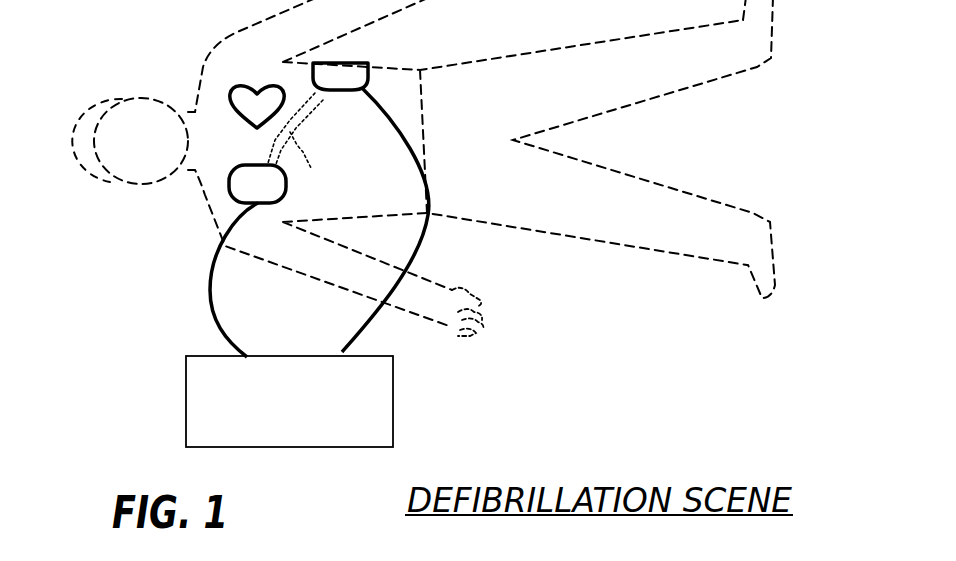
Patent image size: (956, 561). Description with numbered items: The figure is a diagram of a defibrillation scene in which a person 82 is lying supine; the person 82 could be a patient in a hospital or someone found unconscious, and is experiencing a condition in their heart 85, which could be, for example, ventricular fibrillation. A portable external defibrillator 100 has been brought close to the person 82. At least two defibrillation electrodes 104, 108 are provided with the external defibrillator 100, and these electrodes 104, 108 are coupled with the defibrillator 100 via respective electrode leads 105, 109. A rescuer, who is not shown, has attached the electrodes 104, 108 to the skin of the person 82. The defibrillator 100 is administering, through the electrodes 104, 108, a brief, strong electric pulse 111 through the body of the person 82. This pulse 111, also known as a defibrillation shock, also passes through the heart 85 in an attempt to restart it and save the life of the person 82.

The person 82 is at (203, 67).
The heart 85 is at (262, 88).
The portable external defibrillator 100 is at (308, 384).
The defibrillation electrode 104 is at (227, 192).
The electrode lead 105 is at (206, 298).
The defibrillation electrode 108 is at (358, 62).
The electrode lead 109 is at (345, 342).
The electric pulse 111 is at (307, 141).